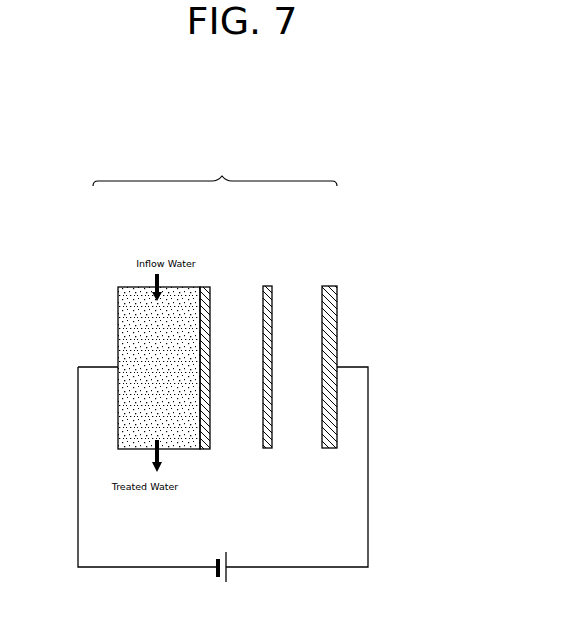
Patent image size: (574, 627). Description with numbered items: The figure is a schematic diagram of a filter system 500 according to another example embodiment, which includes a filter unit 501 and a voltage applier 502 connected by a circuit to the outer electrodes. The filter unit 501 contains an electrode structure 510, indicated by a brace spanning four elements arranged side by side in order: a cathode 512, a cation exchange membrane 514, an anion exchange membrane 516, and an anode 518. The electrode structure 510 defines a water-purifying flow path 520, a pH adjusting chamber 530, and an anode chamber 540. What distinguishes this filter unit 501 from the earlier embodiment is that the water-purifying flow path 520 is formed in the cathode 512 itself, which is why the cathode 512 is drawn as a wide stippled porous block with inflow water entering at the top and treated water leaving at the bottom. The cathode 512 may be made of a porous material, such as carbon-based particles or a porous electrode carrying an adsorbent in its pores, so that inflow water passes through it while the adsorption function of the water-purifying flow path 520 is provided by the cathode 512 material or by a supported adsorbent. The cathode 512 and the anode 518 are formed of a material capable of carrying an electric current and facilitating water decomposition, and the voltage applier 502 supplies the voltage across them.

The filter system 500 is at (198, 116).
The electrode structure 510 is at (215, 167).
The cathode 512 is at (128, 283).
The cation exchange membrane 514 is at (204, 284).
The anion exchange membrane 516 is at (270, 283).
The anode 518 is at (330, 283).
The filter unit 501 is at (341, 329).
The water-purifying flow path 520 is at (192, 452).
The pH adjusting chamber 530 is at (237, 453).
The anode chamber 540 is at (301, 453).
The voltage applier 502 is at (227, 578).